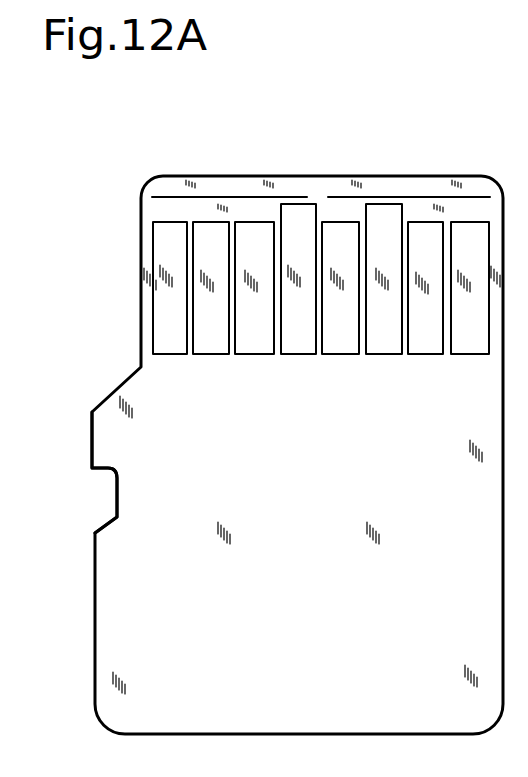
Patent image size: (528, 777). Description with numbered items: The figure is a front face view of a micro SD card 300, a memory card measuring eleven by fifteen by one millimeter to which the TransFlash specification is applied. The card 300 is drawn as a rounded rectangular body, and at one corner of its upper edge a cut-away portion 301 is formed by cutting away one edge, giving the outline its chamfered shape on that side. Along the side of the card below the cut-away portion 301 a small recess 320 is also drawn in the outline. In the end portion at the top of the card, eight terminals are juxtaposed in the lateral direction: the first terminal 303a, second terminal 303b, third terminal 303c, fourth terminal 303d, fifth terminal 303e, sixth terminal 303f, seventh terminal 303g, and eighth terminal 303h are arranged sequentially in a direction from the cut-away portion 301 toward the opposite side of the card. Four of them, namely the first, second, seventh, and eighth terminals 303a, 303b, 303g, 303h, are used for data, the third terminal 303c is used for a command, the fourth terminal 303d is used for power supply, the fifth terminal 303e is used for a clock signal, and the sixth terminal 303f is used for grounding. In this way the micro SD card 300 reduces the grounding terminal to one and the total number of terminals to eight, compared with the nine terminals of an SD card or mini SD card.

The micro SD card 300 is at (330, 565).
The cut-away portion 301 is at (130, 310).
The notch 320 is at (103, 522).
The first terminal 303a is at (172, 233).
The second terminal 303b is at (213, 343).
The third terminal 303c is at (255, 235).
The fourth terminal 303d is at (300, 338).
The fifth terminal 303e is at (342, 232).
The sixth terminal 303f is at (387, 337).
The seventh terminal 303g is at (422, 237).
The eighth terminal 303h is at (472, 337).